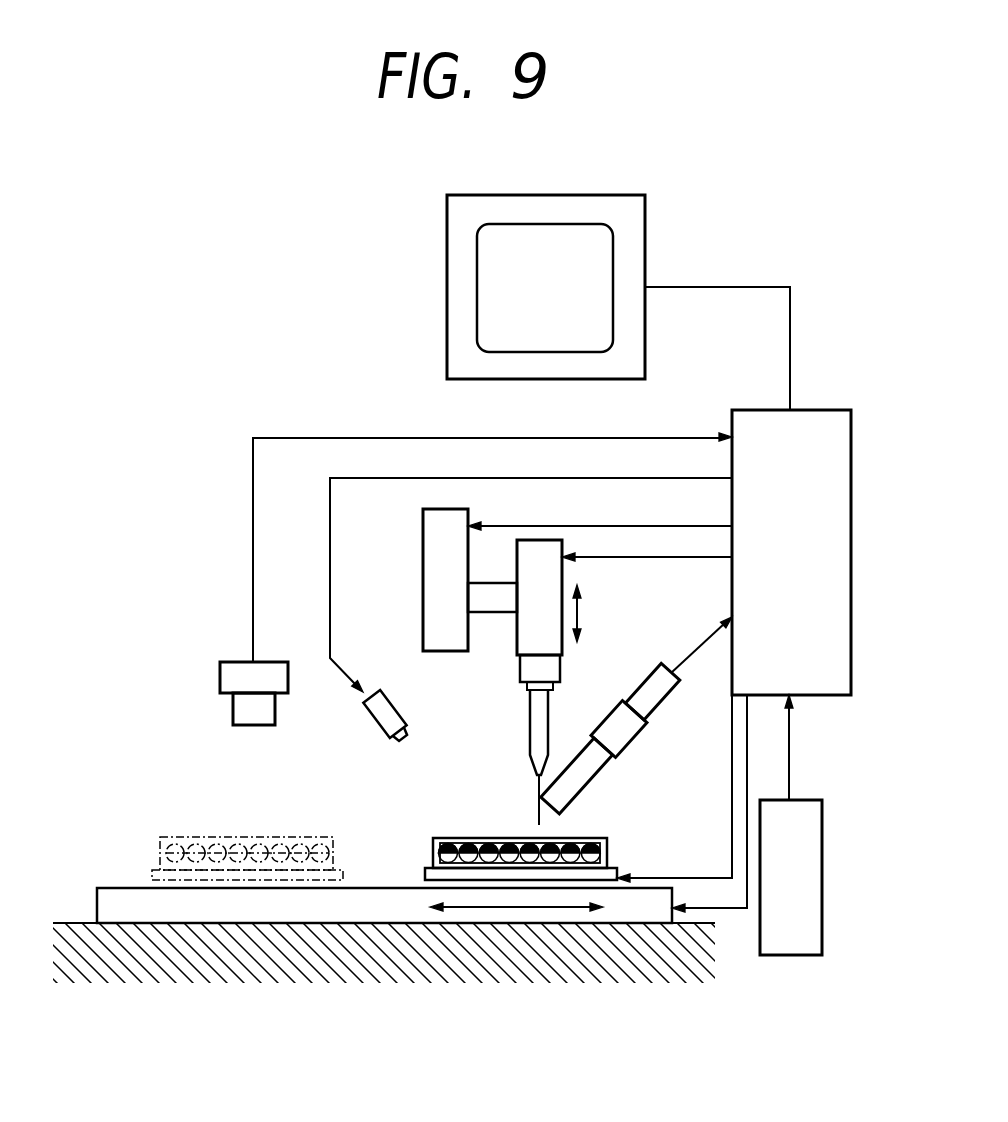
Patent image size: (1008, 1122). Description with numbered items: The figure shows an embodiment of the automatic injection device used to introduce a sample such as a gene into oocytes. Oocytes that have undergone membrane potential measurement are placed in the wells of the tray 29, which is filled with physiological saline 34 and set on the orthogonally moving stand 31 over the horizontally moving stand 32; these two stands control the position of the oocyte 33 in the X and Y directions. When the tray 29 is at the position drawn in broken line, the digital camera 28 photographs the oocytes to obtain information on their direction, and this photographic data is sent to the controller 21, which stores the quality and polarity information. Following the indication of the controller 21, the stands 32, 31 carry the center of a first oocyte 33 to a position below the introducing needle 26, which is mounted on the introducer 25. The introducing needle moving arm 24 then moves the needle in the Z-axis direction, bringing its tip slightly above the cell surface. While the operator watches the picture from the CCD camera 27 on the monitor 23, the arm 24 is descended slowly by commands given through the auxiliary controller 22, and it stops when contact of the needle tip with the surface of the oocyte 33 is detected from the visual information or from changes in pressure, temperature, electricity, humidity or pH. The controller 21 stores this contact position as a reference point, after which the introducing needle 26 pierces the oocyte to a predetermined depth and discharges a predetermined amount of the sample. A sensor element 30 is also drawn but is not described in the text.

The controller 21 is at (828, 410).
The auxiliary controller 22 is at (805, 800).
The monitor 23 is at (647, 233).
The introducing needle moving arm 24 is at (423, 548).
The introducer 25 is at (563, 577).
The introducing needle 26 is at (530, 722).
The CCD camera 27 is at (611, 713).
The digital camera 28 is at (220, 676).
The tray 29 is at (608, 857).
The sensor 30 is at (373, 722).
The orthogonally moving stand 31 is at (425, 872).
The horizontally moving stand 32 is at (130, 888).
The oocyte 33 is at (594, 838).
The physiological saline 34 is at (466, 838).